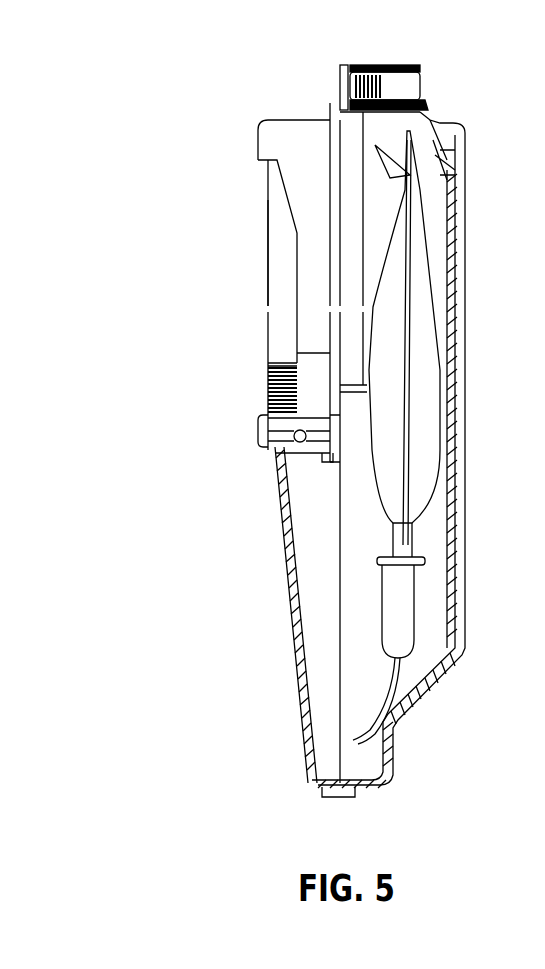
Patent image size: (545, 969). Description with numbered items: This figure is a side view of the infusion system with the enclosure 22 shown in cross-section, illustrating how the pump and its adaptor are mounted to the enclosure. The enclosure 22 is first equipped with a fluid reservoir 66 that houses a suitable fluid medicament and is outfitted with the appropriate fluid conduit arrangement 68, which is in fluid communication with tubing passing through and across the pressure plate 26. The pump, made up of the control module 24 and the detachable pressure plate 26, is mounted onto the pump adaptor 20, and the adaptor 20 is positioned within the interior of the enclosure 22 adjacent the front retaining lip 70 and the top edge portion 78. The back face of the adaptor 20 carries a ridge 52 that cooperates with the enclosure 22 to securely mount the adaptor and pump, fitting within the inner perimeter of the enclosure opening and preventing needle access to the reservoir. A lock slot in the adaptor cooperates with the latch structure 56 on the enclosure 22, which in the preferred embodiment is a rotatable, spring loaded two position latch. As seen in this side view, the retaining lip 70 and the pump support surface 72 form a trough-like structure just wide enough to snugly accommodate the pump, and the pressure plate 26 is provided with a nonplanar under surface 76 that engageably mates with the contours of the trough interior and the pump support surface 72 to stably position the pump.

The pump adaptor 20 is at (270, 127).
The enclosure 22 is at (466, 233).
The control module 24 is at (267, 200).
The pressure plate 26 is at (280, 420).
The ridge 52 is at (345, 127).
The latch structure 56 is at (402, 72).
The fluid reservoir 66 is at (432, 405).
The fluid conduit arrangement 68 is at (415, 610).
The front retaining lip 70 is at (258, 432).
The pump support surface 72 is at (276, 452).
The nonplanar under surface 76 is at (322, 460).
The top edge portion 78 is at (338, 102).